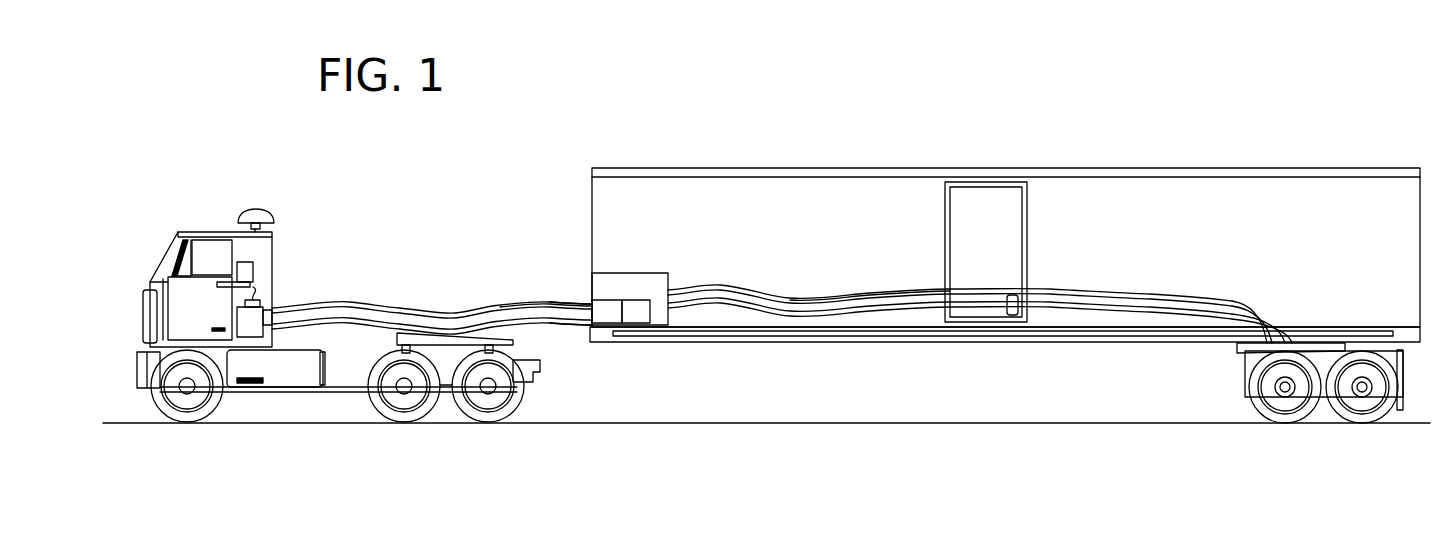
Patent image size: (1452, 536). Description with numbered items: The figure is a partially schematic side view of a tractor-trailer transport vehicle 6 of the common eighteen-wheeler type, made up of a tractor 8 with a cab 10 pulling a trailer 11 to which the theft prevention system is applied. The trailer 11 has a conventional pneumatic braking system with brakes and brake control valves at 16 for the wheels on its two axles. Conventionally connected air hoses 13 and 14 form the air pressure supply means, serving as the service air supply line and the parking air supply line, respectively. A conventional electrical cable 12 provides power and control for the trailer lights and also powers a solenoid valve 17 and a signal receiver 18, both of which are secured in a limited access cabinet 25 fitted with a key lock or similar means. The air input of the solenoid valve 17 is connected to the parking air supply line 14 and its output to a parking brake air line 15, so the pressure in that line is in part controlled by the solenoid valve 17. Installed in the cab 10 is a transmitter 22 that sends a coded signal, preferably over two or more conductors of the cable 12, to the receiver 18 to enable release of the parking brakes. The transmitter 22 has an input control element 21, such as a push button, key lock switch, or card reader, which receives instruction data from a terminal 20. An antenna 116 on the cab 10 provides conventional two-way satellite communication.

The tractor-trailer transport vehicle 6 is at (576, 164).
The tractor 8 is at (300, 392).
The cab 10 is at (202, 232).
The trailer 11 is at (590, 222).
The electrical cable 12 is at (274, 293).
The air hose 13 is at (493, 310).
The air hose 14 is at (565, 323).
The parking brake air line 15 is at (1078, 298).
The brakes and brake control valves 16 is at (1248, 367).
The solenoid valve 17 is at (640, 302).
The signal receiver 18 is at (603, 307).
The terminal 20 is at (222, 276).
The input control element 21 is at (245, 299).
The transmitter 22 is at (248, 330).
The limited access cabinet 25 is at (670, 313).
The antenna 116 is at (251, 212).